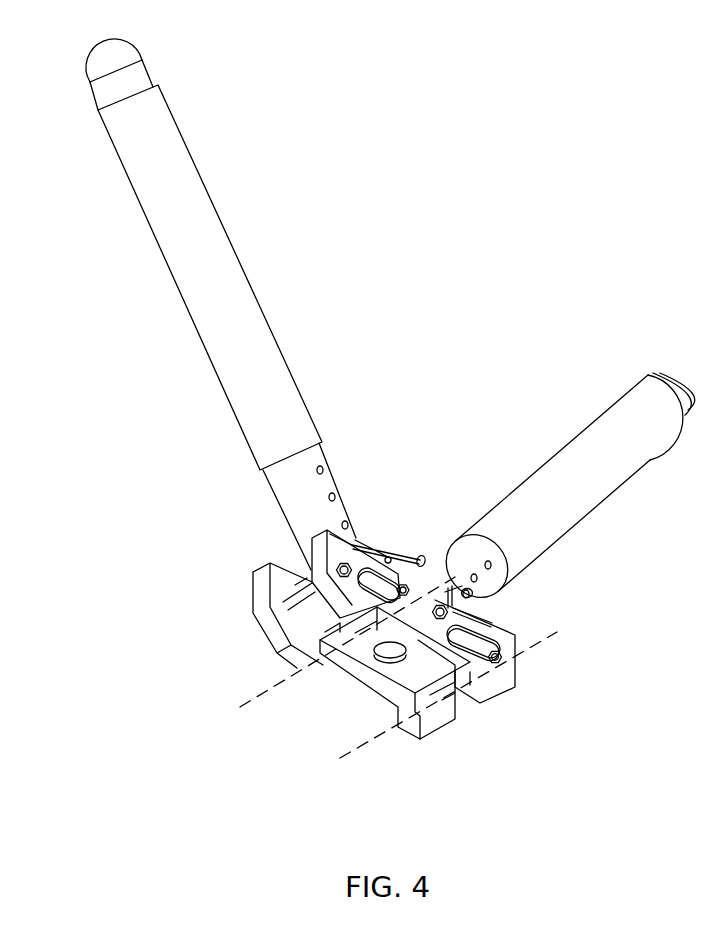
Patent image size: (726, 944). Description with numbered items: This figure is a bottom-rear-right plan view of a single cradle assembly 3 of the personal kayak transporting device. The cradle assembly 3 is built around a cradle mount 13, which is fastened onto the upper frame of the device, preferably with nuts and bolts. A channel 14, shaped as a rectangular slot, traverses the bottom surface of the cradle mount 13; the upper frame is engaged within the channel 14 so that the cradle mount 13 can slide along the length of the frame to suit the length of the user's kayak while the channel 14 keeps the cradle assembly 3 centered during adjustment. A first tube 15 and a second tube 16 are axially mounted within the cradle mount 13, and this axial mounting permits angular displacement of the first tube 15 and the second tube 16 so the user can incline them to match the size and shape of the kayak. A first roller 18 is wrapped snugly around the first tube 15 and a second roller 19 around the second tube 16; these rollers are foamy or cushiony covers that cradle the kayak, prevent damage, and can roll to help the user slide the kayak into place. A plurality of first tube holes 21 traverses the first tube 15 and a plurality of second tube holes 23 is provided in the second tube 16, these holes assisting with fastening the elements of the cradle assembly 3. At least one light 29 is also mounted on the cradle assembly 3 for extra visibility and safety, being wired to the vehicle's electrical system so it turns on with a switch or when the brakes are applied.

The cradle assembly 3 is at (538, 242).
The cradle mount 13 is at (280, 578).
The channel 14 is at (348, 727).
The first tube 15 is at (142, 78).
The second tube 16 is at (652, 372).
The first roller 18 is at (203, 212).
The second roller 19 is at (570, 440).
The first tube holes 21 is at (334, 497).
The second tube holes 23 is at (486, 560).
The light 29 is at (470, 647).